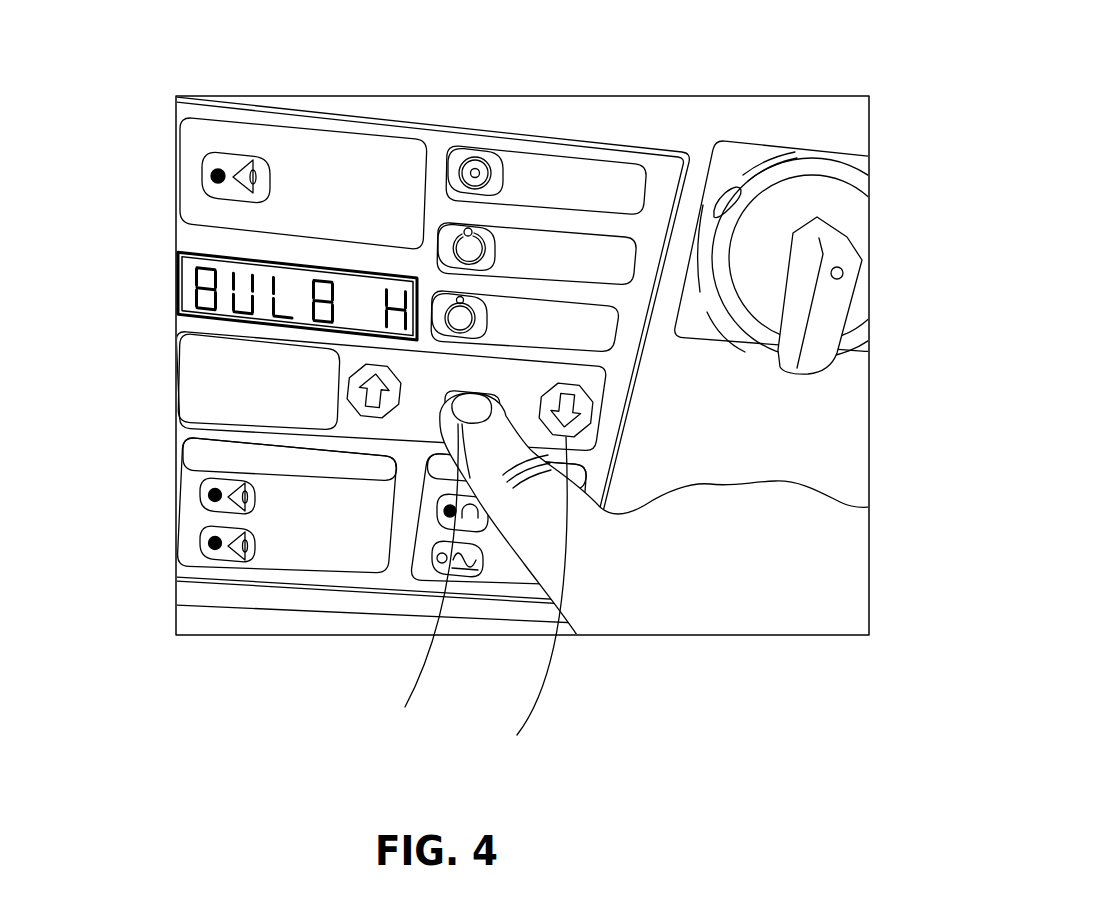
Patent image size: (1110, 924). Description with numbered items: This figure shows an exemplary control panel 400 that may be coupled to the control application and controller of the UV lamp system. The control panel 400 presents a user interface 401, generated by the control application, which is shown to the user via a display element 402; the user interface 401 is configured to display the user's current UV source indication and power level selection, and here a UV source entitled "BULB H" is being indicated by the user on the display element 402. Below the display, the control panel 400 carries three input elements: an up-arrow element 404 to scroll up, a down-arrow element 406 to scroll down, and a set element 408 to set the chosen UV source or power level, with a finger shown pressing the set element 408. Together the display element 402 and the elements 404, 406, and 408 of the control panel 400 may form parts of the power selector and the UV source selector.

The control panel 400 is at (475, 383).
The user interface 401 is at (168, 276).
The display element 402 is at (195, 315).
The scroll up element 404 is at (380, 418).
The scroll down element 406 is at (566, 437).
The set element 408 is at (458, 424).